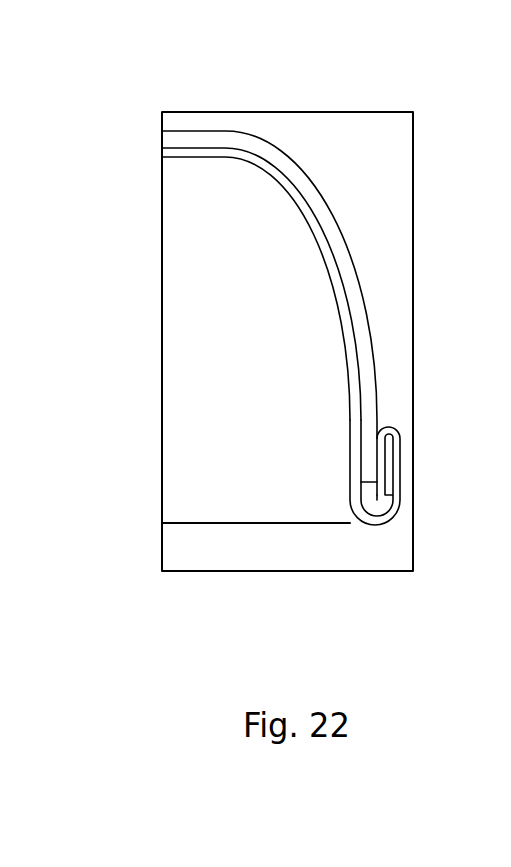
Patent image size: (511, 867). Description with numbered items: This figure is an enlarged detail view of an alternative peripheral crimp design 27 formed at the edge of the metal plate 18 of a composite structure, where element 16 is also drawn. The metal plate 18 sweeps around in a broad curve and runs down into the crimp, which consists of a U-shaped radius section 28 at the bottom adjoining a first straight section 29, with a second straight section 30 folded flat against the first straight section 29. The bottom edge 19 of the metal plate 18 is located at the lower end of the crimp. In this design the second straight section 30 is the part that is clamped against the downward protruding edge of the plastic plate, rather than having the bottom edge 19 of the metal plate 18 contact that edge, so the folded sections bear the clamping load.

The outer layer 16 is at (260, 140).
The metal plate 18 is at (191, 151).
The bottom edge 19 is at (378, 518).
The peripheral crimp design 27 is at (400, 379).
The U-shaped radius section 28 is at (374, 516).
The first straight section 29 is at (392, 457).
The second straight section 30 is at (377, 470).